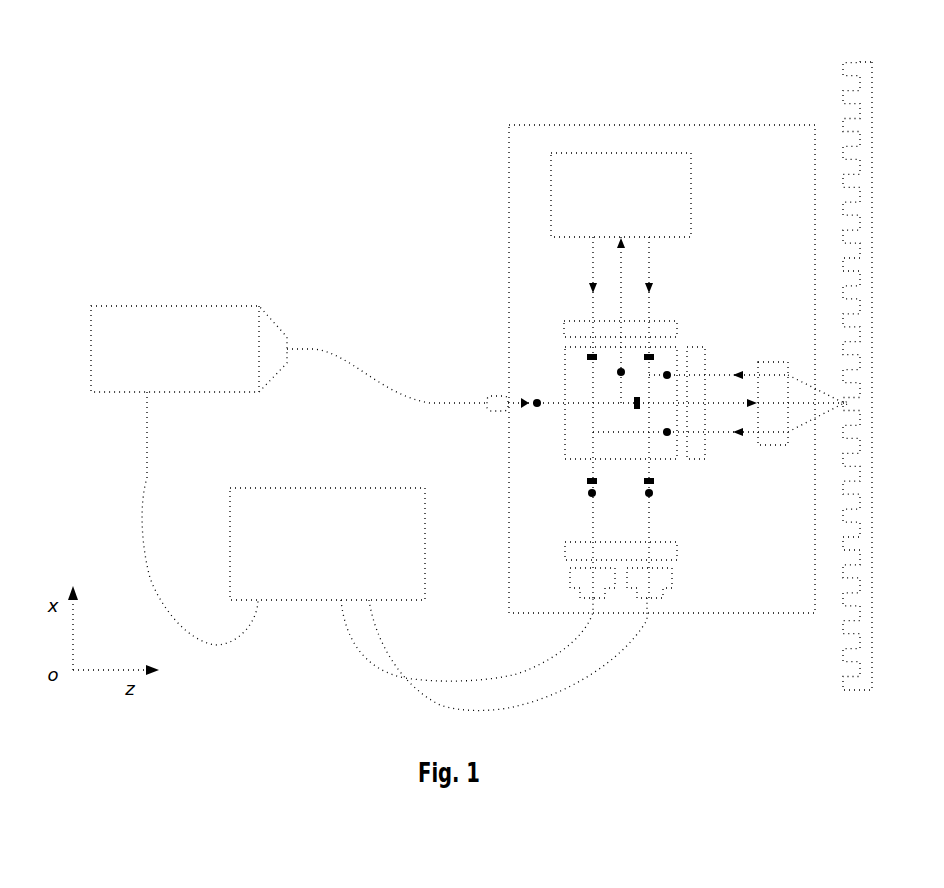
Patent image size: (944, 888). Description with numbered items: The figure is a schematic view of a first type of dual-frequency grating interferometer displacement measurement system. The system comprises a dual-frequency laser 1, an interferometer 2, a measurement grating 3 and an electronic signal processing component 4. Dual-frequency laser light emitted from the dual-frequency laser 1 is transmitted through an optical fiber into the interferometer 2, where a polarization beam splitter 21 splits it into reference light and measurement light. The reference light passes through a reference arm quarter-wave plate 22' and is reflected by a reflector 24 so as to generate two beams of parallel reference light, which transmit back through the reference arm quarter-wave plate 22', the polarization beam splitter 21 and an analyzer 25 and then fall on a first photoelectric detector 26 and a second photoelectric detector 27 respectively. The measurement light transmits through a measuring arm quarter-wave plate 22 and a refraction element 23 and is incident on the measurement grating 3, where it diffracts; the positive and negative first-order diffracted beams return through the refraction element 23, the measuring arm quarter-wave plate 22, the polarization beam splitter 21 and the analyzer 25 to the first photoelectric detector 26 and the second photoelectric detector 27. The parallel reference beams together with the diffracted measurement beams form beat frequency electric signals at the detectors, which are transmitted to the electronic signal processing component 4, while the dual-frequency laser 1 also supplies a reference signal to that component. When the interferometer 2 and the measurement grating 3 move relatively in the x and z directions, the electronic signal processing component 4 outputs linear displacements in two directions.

The dual-frequency laser head 1 is at (202, 318).
The interferometer 2 is at (570, 125).
The measurement grating 3 is at (865, 72).
The electronic signal processing component 4 is at (342, 515).
The polarization beam splitter 21 is at (677, 350).
The measuring arm quarter-wave plate 22 is at (701, 433).
The reference arm quarter-wave plate 22' is at (656, 306).
The refraction element 23 is at (773, 445).
The reflector 24 is at (677, 192).
The analyzer 25 is at (670, 550).
The first photoelectric detector 26 is at (663, 578).
The second photoelectric detector 27 is at (582, 580).